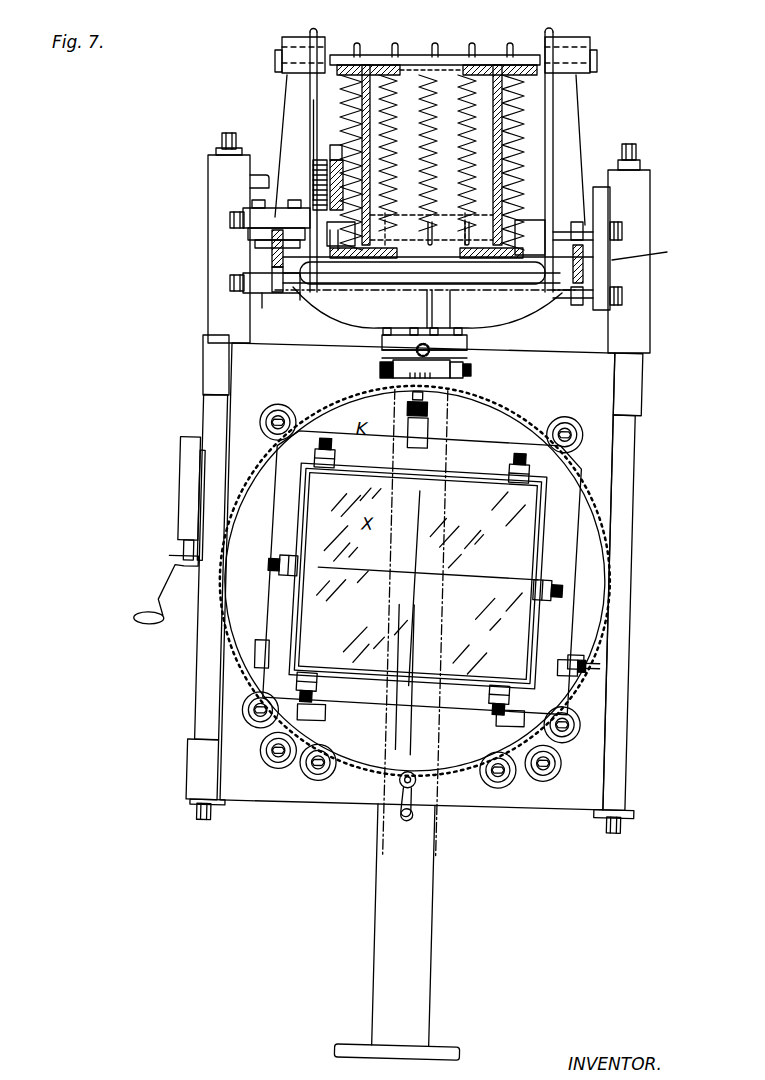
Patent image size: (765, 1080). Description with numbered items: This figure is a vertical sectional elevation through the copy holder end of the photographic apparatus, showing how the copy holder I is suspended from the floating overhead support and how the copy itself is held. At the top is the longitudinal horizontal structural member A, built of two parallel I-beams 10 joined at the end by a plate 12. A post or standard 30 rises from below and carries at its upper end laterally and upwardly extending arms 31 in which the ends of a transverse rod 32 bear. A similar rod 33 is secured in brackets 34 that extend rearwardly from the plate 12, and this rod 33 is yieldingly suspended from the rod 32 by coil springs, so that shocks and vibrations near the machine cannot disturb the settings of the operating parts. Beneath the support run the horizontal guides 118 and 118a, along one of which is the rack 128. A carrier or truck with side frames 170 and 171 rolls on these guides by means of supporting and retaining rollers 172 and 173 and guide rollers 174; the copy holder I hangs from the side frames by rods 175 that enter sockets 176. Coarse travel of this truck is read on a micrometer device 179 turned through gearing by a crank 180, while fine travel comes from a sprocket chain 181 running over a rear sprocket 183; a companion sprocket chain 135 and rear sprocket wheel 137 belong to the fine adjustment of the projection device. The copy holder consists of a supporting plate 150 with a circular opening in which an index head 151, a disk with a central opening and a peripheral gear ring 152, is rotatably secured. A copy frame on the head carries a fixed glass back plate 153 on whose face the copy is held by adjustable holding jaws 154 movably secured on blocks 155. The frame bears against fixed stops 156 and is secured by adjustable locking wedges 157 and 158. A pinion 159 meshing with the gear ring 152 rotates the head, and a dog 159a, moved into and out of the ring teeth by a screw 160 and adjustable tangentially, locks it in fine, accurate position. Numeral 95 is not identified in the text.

The transverse rod 32 is at (380, 56).
The arms 31 is at (292, 100).
The longitudinal horizontal structural member A is at (305, 88).
The spring housing 95 is at (352, 120).
The plate 12 is at (488, 140).
The I-beams 10 is at (487, 168).
The rear sprocket wheel 137 is at (355, 197).
The rear sprocket 183 is at (427, 230).
The supporting and retaining rollers 172 is at (288, 208).
The sprocket chain 135 is at (336, 162).
The sprocket chain 181 is at (312, 152).
The side frame 170 is at (250, 187).
The guide rollers 174 is at (245, 224).
The rack 128 is at (272, 243).
The guide 118 is at (260, 270).
The supporting and retaining rollers 173 is at (290, 293).
The side frame 171 is at (612, 200).
The guide 118a is at (585, 266).
The copy holder I is at (419, 312).
The rod 33 is at (479, 298).
The brackets 34 is at (333, 258).
The screw 160 is at (440, 352).
The dog 159a is at (385, 383).
The supporting plate 150 is at (417, 576).
The sockets 176 is at (207, 320).
The rods 175 is at (212, 421).
The index head 151 is at (200, 634).
The adjustable locking wedge 158 is at (431, 415).
The peripheral gear ring 152 is at (535, 423).
The glass back plate 153 is at (306, 534).
The holding jaws 154 is at (341, 458).
The blocks 155 is at (303, 586).
The fixed stops 156 is at (270, 639).
The adjustable locking wedge 157 is at (590, 648).
The pinion 159 is at (431, 777).
The micrometer device 179 is at (185, 516).
The crank 180 is at (170, 588).
The post or standard 30 is at (389, 902).